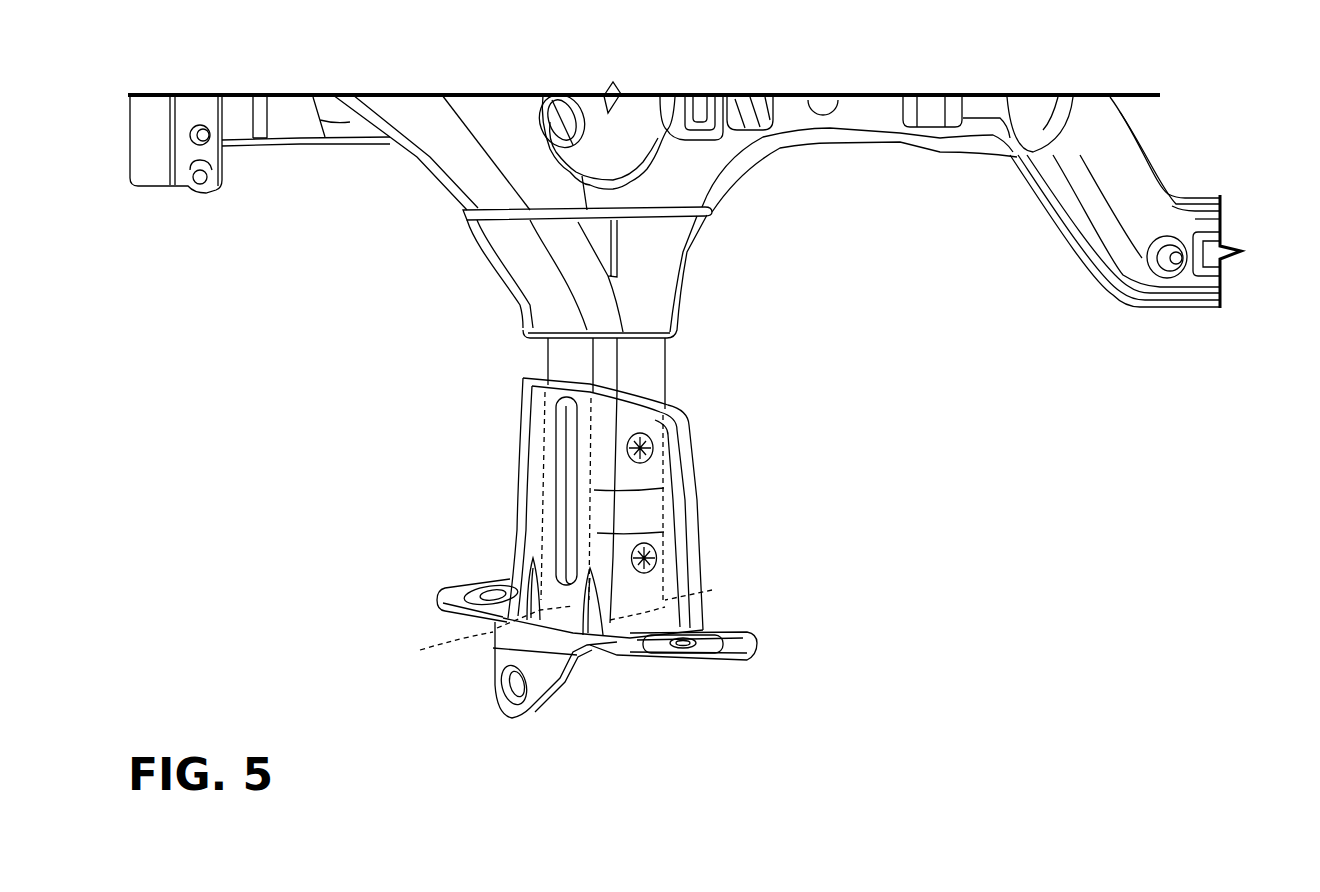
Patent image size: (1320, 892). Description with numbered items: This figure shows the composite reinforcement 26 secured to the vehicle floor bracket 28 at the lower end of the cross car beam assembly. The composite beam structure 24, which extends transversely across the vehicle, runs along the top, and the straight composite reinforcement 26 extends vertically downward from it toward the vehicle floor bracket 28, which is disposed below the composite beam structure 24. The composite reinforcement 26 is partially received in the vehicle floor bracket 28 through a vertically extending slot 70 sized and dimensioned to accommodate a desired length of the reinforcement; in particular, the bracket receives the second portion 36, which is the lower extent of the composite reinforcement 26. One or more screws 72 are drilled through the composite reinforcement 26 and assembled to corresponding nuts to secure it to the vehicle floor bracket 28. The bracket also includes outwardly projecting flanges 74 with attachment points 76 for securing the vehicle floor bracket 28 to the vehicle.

The composite beam structure 24 is at (1136, 120).
The composite reinforcement 26 is at (685, 360).
The vehicle floor bracket 28 is at (508, 475).
The second portion 36 is at (441, 652).
The vertically extending slot 70 is at (712, 590).
The screws 72 is at (653, 446).
The outwardly projecting flanges 74 is at (437, 598).
The attachment points 76 is at (493, 582).